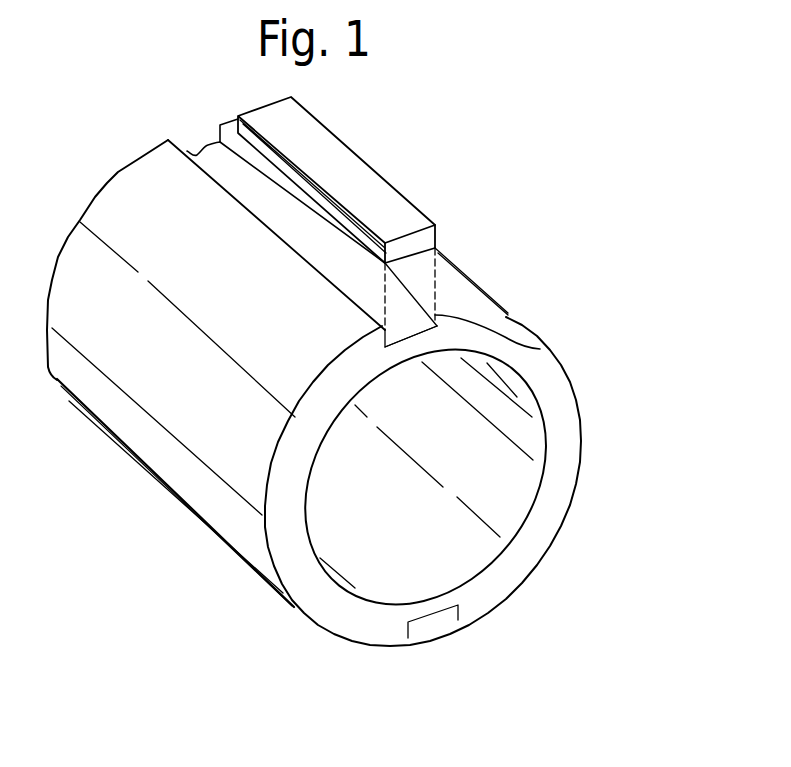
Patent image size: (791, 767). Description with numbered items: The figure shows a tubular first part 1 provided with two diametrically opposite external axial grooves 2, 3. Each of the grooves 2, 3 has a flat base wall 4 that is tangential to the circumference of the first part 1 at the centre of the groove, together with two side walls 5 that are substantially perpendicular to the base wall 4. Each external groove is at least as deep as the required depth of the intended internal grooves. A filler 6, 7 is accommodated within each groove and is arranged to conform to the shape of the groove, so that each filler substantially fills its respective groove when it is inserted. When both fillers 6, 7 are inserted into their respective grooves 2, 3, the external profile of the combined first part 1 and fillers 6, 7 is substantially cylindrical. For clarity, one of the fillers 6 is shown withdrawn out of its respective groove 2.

The tubular first part 1 is at (604, 402).
The external axial groove 2 is at (416, 326).
The external axial groove 3 is at (448, 607).
The base wall 4 is at (406, 349).
The side wall 5 is at (438, 327).
The filler 6 is at (378, 208).
The filler 7 is at (434, 624).